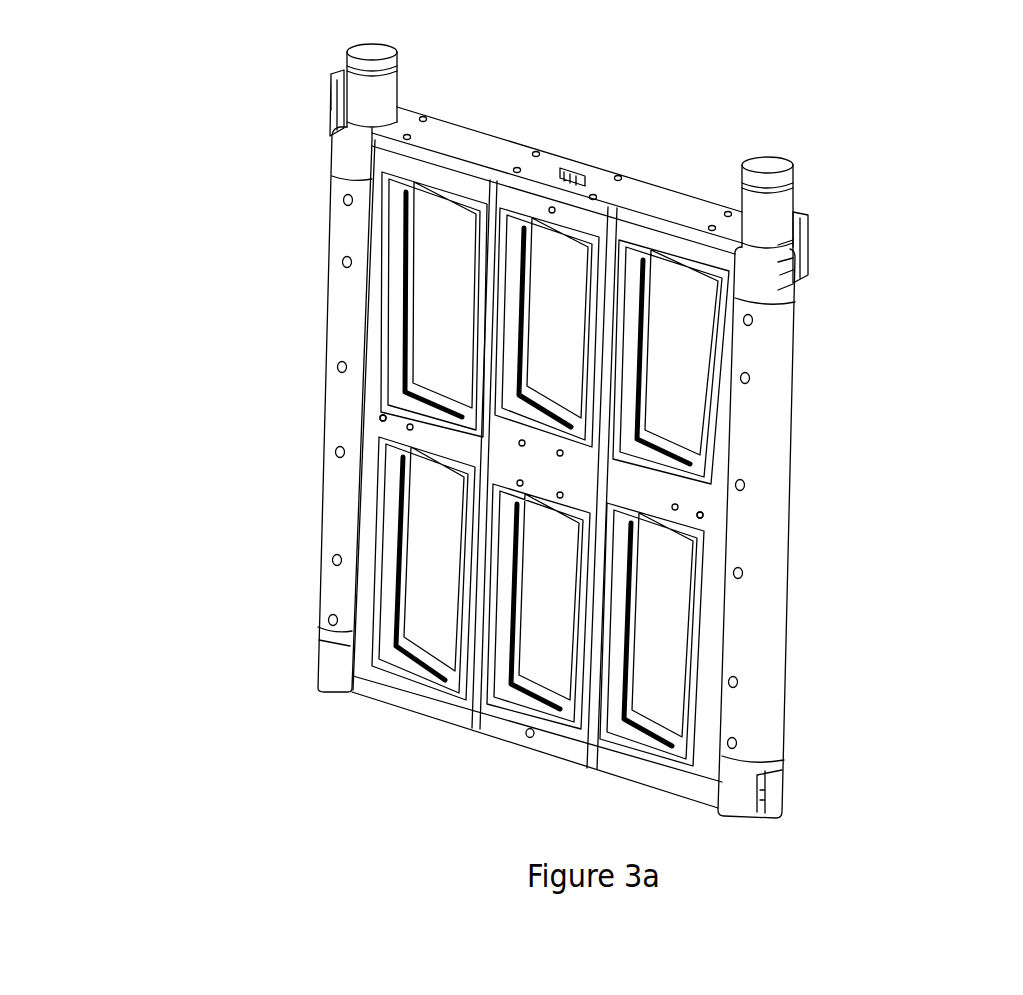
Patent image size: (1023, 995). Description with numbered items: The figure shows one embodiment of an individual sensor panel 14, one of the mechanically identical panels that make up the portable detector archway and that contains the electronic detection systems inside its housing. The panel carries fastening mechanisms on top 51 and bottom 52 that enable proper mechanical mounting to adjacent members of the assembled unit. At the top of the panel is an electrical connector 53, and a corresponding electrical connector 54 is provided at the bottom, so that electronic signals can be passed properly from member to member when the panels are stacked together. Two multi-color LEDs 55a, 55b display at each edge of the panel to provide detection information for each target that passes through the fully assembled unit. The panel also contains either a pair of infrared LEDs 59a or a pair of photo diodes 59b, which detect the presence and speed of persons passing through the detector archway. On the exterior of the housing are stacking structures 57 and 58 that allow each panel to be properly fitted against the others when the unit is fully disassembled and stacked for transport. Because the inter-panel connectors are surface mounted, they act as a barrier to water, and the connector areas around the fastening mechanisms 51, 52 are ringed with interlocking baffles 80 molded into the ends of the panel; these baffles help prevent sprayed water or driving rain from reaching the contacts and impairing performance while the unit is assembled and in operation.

The sensor panel 14 is at (290, 311).
The top fastening mechanism 51 is at (325, 100).
The bottom fastening mechanism 52 is at (315, 671).
The top electrical connector 53 is at (582, 155).
The bottom electrical connector 54 is at (524, 757).
The multi-color LED 55a is at (795, 518).
The multi-color LED 55b is at (319, 402).
The stacking structure 57 is at (328, 253).
The stacking structure 58 is at (325, 558).
The infrared LEDs 59a is at (377, 422).
The photo diodes 59b is at (541, 466).
The interlocking baffles 80 is at (378, 97).